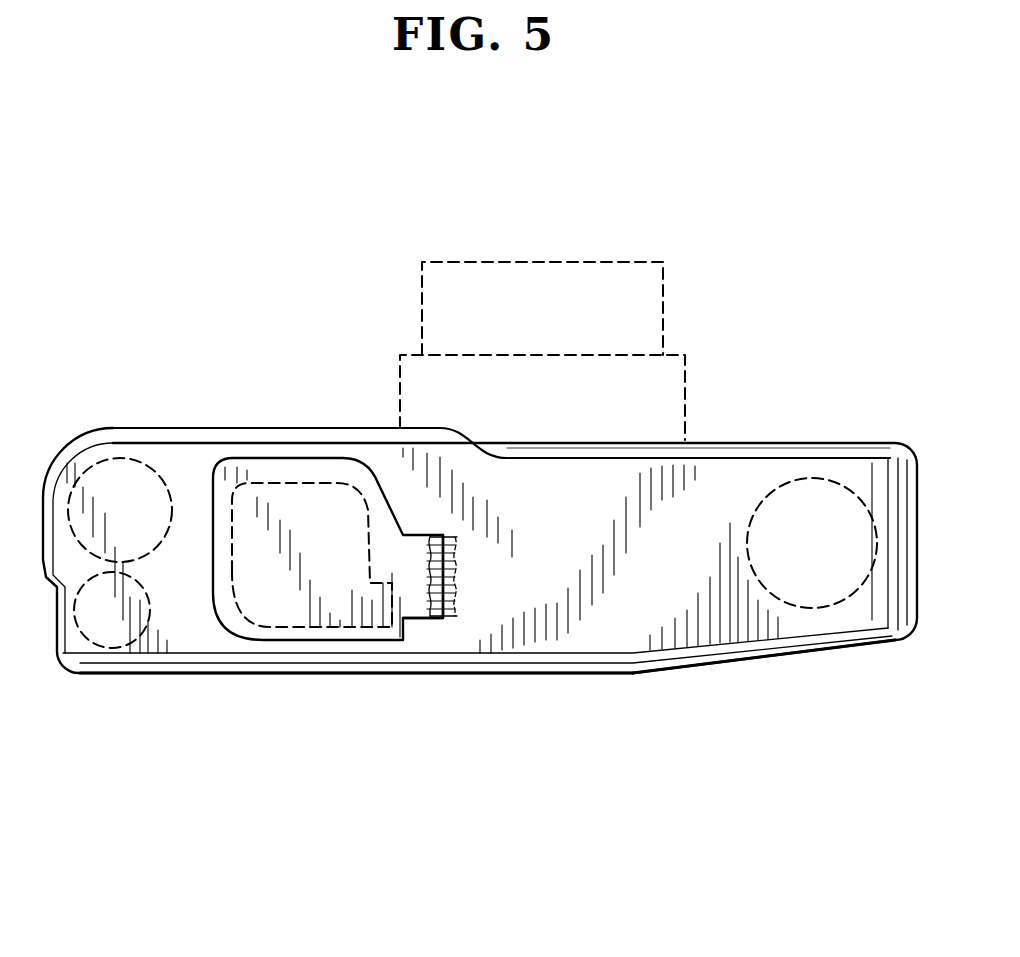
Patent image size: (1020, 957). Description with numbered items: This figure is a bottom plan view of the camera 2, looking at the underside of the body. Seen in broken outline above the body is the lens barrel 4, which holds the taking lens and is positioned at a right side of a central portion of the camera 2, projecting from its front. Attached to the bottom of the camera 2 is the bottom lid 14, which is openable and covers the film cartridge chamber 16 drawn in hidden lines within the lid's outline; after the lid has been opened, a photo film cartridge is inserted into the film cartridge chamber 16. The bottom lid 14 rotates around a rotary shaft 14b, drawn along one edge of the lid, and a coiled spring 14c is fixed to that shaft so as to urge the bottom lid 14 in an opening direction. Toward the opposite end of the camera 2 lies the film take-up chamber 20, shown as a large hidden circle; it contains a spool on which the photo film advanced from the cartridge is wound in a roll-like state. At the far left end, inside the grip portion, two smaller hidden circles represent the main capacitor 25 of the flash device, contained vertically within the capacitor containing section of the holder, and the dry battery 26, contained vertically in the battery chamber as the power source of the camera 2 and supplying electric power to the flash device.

The camera 2 is at (548, 673).
The lens barrel 4 is at (562, 272).
The bottom lid 14 is at (300, 465).
The rotary shaft 14b is at (440, 618).
The coiled spring 14c is at (452, 577).
The film cartridge chamber 16 is at (300, 627).
The film take-up chamber 20 is at (812, 600).
The main capacitor 25 is at (112, 637).
The dry battery 26 is at (122, 473).